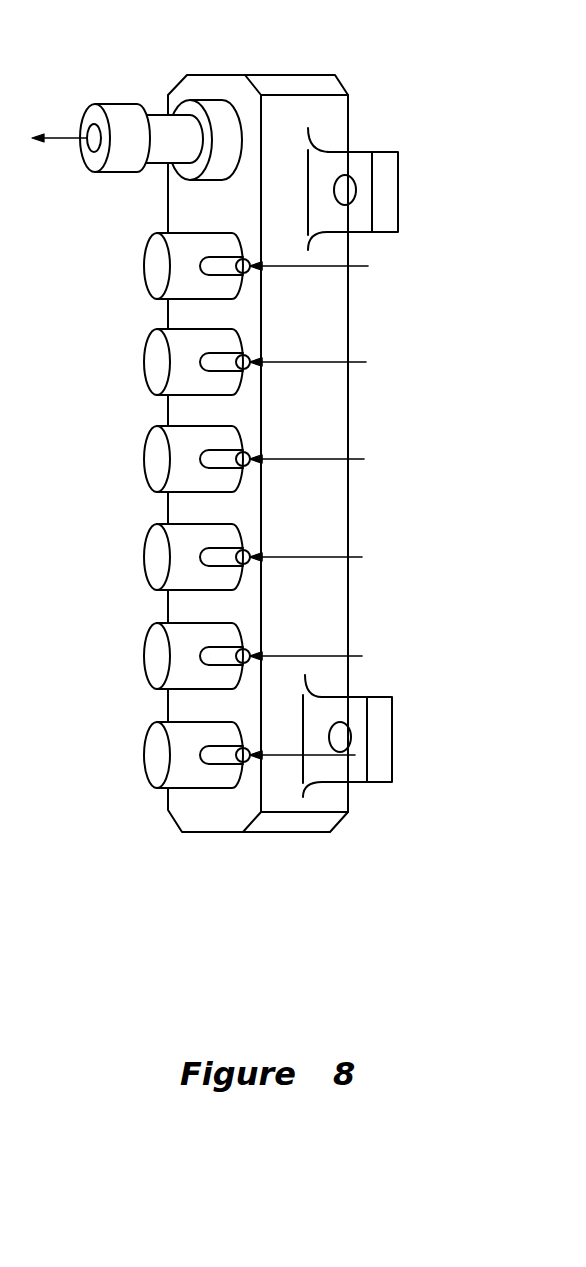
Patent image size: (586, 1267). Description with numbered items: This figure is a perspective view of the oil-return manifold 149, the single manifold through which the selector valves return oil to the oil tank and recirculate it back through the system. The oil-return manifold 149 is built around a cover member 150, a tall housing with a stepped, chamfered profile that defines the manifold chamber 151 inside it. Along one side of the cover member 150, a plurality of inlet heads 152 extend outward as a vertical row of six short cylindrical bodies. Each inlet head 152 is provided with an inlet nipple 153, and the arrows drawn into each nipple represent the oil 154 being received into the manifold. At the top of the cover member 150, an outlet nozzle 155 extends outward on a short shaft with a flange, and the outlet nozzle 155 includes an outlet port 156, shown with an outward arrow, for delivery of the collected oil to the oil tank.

The oil-return manifold 149 is at (137, 413).
The cover member 150 is at (292, 112).
The manifold chamber 151 is at (330, 95).
The inlet heads 152 is at (163, 264).
The inlet nipple 153 is at (242, 258).
The oil 154 is at (250, 268).
The outlet nozzle 155 is at (122, 123).
The outlet port 156 is at (95, 130).